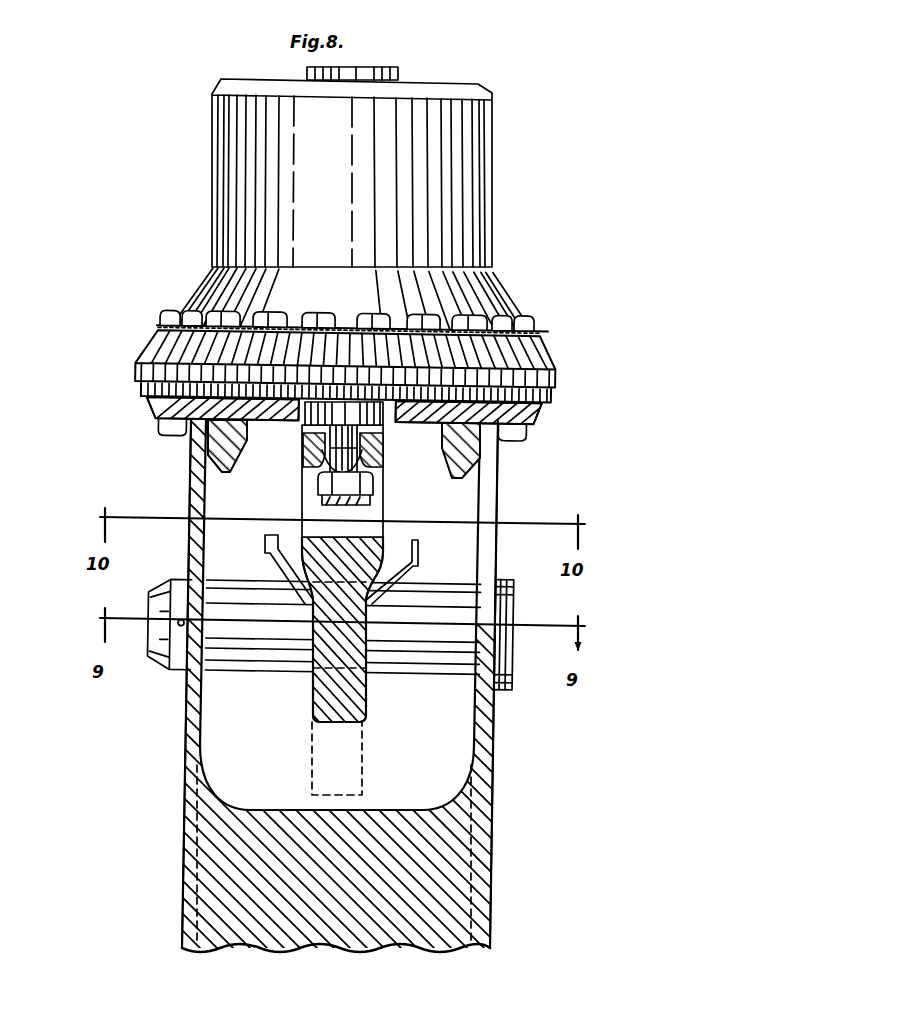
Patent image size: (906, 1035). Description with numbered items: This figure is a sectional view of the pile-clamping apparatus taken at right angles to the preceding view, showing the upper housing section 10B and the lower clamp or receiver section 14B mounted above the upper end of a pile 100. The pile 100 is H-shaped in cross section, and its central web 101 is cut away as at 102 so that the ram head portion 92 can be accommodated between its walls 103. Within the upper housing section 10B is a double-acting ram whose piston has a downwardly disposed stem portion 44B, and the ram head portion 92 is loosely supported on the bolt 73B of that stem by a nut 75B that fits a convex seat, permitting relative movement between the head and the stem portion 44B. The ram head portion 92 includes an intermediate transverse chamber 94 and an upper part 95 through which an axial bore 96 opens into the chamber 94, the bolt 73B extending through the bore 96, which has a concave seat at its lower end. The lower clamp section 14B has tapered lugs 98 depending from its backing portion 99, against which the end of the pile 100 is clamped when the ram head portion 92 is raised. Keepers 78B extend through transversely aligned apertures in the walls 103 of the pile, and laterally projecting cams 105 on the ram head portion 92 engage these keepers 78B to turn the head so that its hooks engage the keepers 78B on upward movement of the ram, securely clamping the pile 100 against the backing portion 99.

The upper housing section 10B is at (492, 193).
The lower clamp or receiver section 14B is at (148, 392).
The tapered lugs 98 is at (222, 446).
The backing portion 99 is at (268, 420).
The stem portion 44B is at (312, 428).
The nut 75B is at (338, 487).
The upper part 95 is at (381, 452).
The bore 96 is at (370, 462).
The bolt 73B is at (385, 480).
The intermediate transverse chamber 94 is at (375, 506).
The ram head portion 92 is at (388, 547).
The cams 105 is at (285, 572).
The keepers 78B is at (445, 657).
The walls 103 is at (190, 690).
The cut away 102 is at (418, 790).
The pile 100 is at (498, 899).
The central web 101 is at (292, 912).